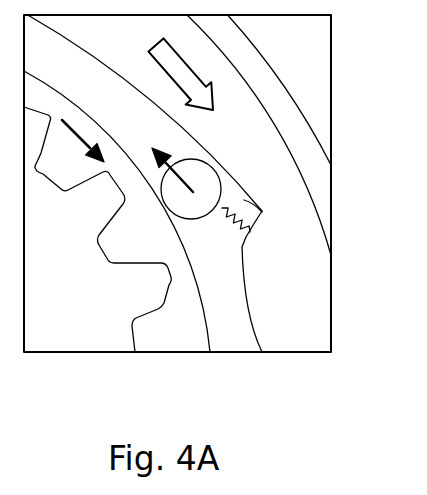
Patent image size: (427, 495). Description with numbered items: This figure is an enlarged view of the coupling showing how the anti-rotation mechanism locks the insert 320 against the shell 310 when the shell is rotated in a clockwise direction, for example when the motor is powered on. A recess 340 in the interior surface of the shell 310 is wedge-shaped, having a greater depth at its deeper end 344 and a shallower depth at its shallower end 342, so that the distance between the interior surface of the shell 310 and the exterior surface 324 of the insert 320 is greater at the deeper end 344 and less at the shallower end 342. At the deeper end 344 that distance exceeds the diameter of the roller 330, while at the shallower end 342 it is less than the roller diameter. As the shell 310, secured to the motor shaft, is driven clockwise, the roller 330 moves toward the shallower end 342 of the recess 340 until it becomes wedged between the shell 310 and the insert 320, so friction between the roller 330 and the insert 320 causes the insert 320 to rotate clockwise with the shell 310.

The shell 310 is at (236, 73).
The insert 320 is at (186, 344).
The exterior surface 324 is at (200, 294).
The roller 330 is at (216, 165).
The recess 340 is at (251, 225).
The shallower end 342 is at (204, 144).
The deeper end 344 is at (268, 192).